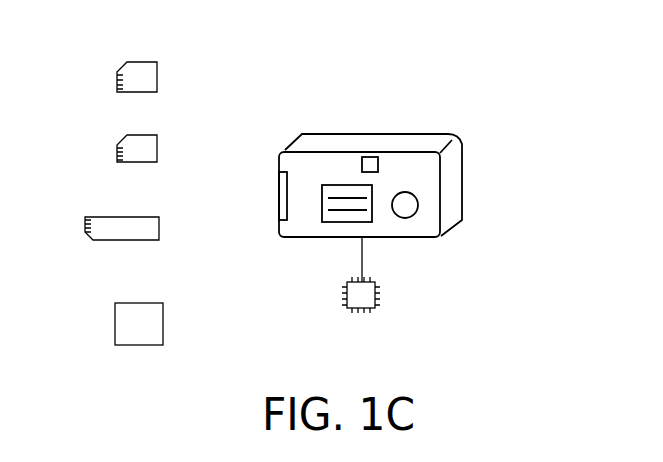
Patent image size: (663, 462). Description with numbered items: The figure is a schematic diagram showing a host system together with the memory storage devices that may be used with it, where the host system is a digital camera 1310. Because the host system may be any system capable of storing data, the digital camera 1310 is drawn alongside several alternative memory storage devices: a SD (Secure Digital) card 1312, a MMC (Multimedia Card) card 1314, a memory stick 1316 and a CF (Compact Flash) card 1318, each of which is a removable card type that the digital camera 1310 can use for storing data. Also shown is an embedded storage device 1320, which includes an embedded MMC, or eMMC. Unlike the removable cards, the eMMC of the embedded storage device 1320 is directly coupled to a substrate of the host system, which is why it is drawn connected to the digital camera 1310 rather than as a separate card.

The digital camera 1310 is at (462, 165).
The SD card 1312 is at (157, 68).
The MMC card 1314 is at (157, 140).
The memory stick 1316 is at (159, 228).
The CF card 1318 is at (163, 318).
The embedded storage device 1320 is at (380, 297).